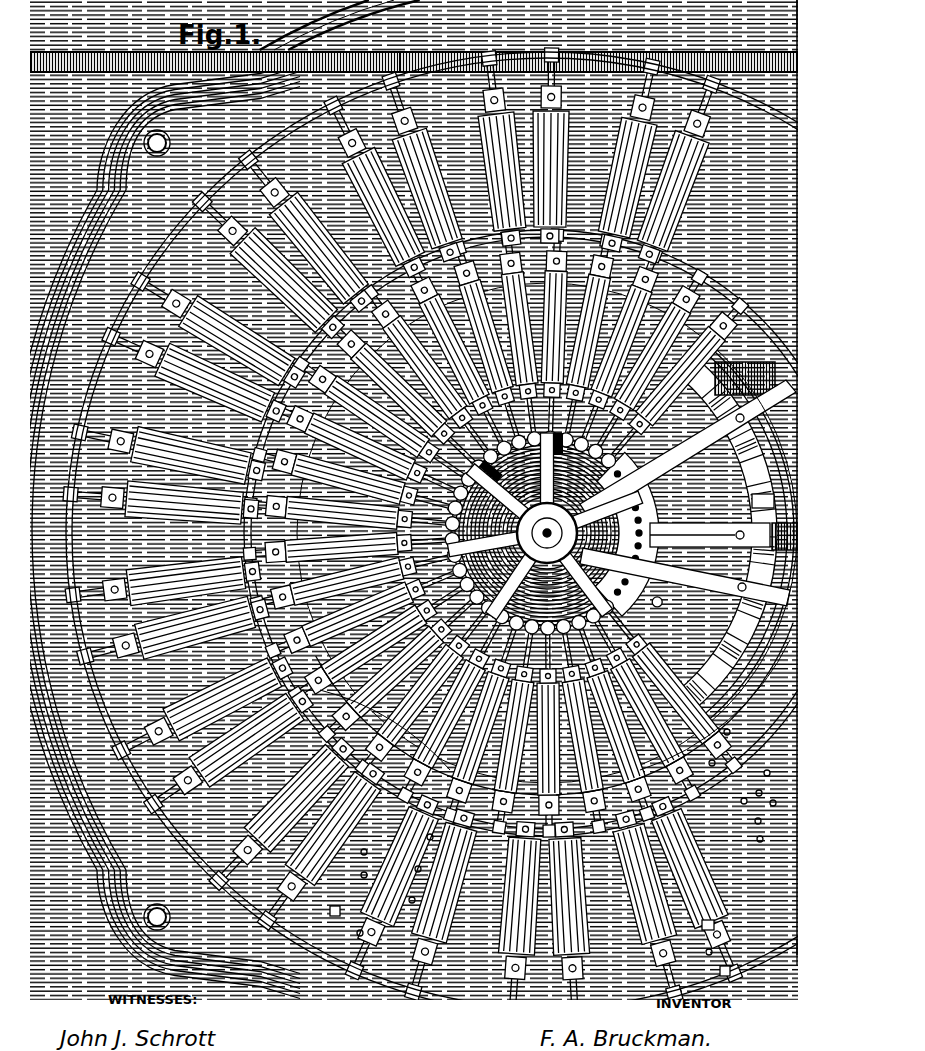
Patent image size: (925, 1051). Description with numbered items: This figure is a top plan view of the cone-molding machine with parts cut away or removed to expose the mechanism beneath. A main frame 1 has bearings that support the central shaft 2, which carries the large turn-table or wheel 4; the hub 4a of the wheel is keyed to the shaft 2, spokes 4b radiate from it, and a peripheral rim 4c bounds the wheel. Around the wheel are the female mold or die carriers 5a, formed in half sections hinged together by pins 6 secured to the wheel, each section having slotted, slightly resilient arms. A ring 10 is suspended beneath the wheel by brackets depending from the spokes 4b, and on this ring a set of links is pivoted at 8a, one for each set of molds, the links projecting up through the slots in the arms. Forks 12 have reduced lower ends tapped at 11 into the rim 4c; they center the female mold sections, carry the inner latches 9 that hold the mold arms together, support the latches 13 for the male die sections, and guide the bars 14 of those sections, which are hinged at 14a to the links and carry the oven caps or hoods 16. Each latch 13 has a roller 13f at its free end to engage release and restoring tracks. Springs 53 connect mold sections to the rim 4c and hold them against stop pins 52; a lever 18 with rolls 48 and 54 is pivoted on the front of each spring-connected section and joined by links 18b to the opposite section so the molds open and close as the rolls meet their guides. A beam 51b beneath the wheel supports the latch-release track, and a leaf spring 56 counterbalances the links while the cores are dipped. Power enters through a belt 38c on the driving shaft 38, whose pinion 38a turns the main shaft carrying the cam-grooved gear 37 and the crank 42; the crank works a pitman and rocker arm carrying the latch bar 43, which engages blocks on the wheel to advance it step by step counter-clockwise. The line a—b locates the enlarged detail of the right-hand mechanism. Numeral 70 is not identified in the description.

The main frame 1 is at (373, 46).
The central shaft 2 is at (545, 531).
The turn-table or wheel 4 is at (568, 524).
The hub 4a is at (548, 549).
The spokes 4b is at (693, 441).
The peripheral rim 4c is at (748, 686).
The female mold or die carriers 5a is at (474, 647).
The beam 51b is at (726, 530).
The pins 6 is at (513, 616).
The link pivots 8a is at (760, 494).
The inner latches 9 is at (774, 800).
The ring 10 is at (752, 470).
The tapped connection 11 is at (760, 790).
The forks 12 is at (762, 836).
The latches 13 is at (428, 840).
The roller 13f is at (760, 818).
The bars 14 is at (526, 641).
The hinge 14a is at (646, 672).
The oven caps or hoods 16 is at (730, 860).
The lever 18 is at (708, 930).
The links 18b is at (706, 955).
The gear 37 is at (760, 446).
The driving shaft 38 is at (710, 52).
The pinion 38a is at (745, 395).
The belt 38c is at (131, 53).
The crank 42 is at (752, 326).
The latch bar 43 is at (760, 240).
The roll 48 is at (742, 950).
The stop pins 52 is at (728, 729).
The springs 53 is at (712, 760).
The roll 54 is at (724, 976).
The leaf spring 56 is at (783, 524).
The pin 70 is at (768, 770).
The section line a is at (796, 15).
The section line b is at (790, 962).